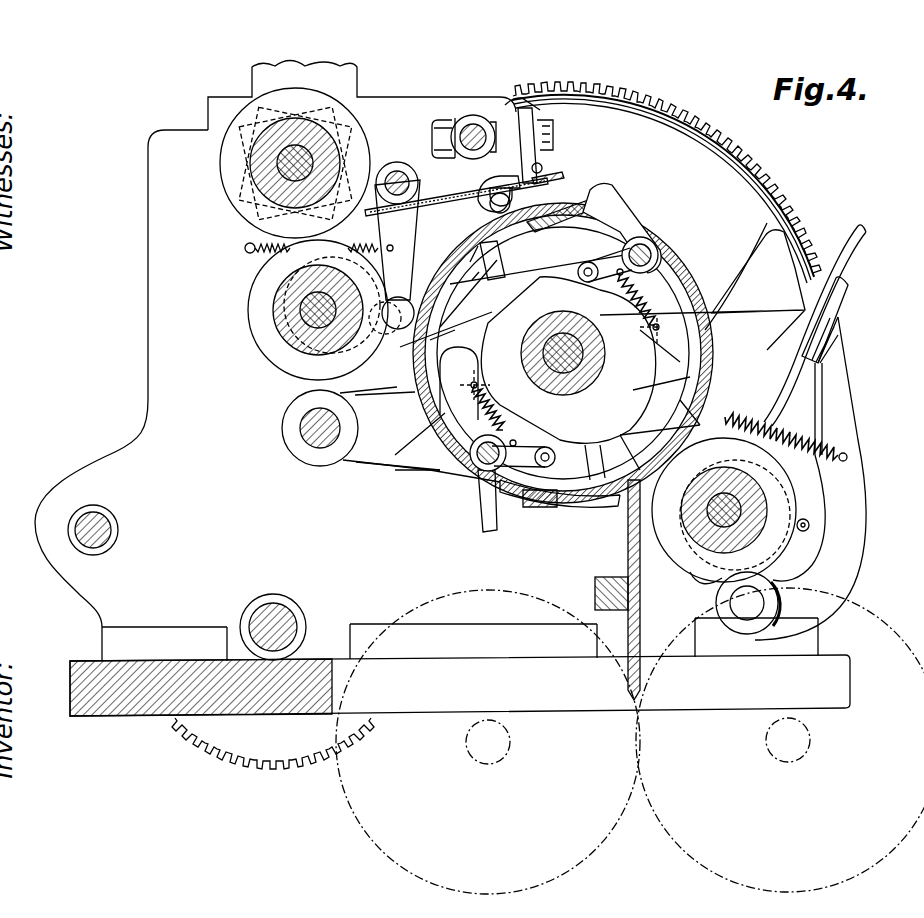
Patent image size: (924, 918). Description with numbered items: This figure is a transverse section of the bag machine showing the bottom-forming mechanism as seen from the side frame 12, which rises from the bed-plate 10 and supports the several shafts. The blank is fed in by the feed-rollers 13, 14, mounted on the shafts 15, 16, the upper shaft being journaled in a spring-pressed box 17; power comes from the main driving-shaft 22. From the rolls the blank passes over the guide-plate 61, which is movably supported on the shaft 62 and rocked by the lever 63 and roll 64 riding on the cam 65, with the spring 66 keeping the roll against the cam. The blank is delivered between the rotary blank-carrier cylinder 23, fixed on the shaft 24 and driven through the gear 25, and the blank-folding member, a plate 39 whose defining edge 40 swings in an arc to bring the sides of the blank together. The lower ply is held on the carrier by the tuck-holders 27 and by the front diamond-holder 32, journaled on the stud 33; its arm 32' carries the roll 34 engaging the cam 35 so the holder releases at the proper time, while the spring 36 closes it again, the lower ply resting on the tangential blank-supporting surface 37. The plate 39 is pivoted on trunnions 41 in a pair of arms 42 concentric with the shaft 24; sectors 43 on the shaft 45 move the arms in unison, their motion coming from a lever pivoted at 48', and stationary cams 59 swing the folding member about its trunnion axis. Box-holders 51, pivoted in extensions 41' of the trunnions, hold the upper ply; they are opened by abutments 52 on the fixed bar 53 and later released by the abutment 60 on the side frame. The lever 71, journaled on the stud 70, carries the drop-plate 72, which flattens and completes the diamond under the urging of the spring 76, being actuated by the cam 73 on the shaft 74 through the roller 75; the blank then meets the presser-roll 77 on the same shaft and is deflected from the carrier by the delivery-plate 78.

The bed-plate 10 is at (460, 685).
The side frame 12 is at (426, 361).
The feed-roller 13 is at (262, 348).
The feed-roller 14 is at (230, 170).
The shaft 15 is at (295, 345).
The shaft 16 is at (268, 182).
The box 17 is at (256, 208).
The main driving-shaft 22 is at (285, 600).
The cylinder (blank-carrier) 23 is at (670, 262).
The shaft 24 is at (543, 360).
The gear 25 is at (770, 190).
The tuck-holder 27 is at (595, 478).
The front diamond-holder 32 is at (556, 358).
The arm 32' is at (566, 352).
The stud 33 is at (652, 246).
The roll 34 is at (578, 258).
The cam 35 is at (568, 360).
The spring 36 is at (660, 312).
The tangential blank-supporting surface 37 is at (568, 198).
The plate (blank-folding member) 39 is at (560, 176).
The defining edge 40 is at (493, 176).
The trunnion 41 is at (478, 211).
The extension 41' is at (520, 124).
The arm 42 is at (500, 270).
The sector 43 is at (397, 431).
The shaft 45 is at (300, 428).
The pivot 48' is at (119, 530).
The box-holder 51 is at (540, 108).
The abutment 52 is at (476, 122).
The fixed shaft or bar 53 is at (468, 155).
The cam 59 is at (425, 468).
The abutment 60 is at (705, 336).
The guide-plate 61 is at (456, 200).
The shaft 62 is at (400, 175).
The lever 63 is at (397, 240).
The roll 64 is at (404, 300).
The cam 65 is at (340, 360).
The spring 66 is at (258, 255).
The stud 70 is at (748, 603).
The lever 71 is at (743, 478).
The drop-plate 72 is at (836, 262).
The cam 73 is at (790, 490).
The shaft 74 is at (722, 490).
The roller 75 is at (812, 520).
The spring 76 is at (780, 438).
The presser-roll 77 is at (724, 511).
The delivery-plate 78 is at (640, 628).